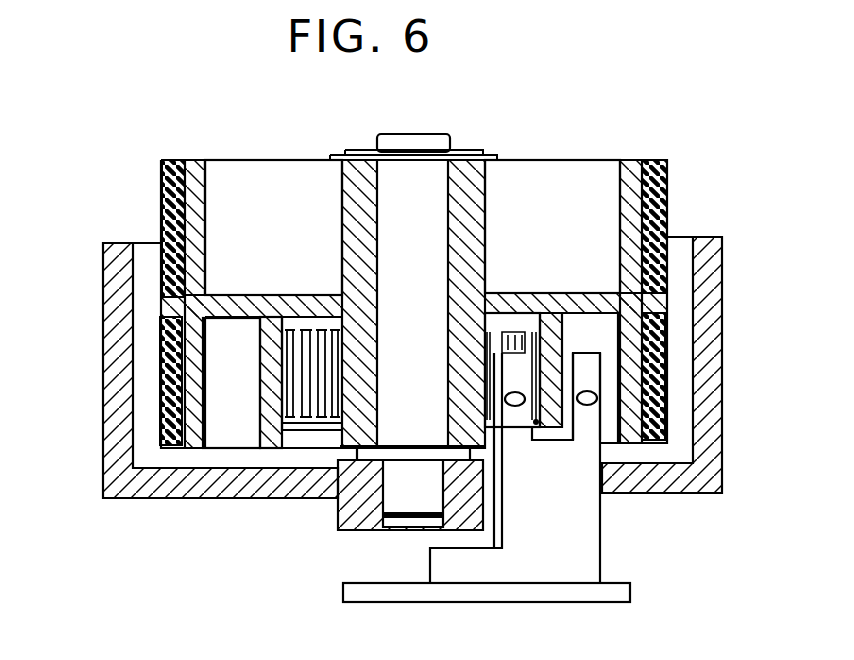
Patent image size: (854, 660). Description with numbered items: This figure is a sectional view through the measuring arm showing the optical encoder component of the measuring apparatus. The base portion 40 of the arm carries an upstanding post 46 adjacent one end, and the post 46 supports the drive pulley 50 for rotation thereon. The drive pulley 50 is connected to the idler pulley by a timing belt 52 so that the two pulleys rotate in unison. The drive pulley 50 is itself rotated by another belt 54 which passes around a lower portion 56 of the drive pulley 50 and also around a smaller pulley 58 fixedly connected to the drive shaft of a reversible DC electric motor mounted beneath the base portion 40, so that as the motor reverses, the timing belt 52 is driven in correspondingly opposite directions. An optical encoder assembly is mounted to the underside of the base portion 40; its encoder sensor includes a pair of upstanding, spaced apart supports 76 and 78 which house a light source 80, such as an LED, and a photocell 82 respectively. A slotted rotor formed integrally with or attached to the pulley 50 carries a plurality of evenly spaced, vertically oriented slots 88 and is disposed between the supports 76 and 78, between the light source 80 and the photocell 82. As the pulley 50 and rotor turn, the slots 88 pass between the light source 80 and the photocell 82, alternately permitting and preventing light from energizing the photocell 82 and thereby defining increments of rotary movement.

The base portion 40 is at (722, 330).
The post 46 is at (410, 140).
The drive pulley 50 is at (567, 185).
The timing belt 52 is at (162, 192).
The belt 54 is at (160, 393).
The lower portion 56 is at (203, 411).
The smaller pulley 58 is at (265, 432).
The support 76 is at (600, 362).
The support 78 is at (522, 322).
The light source 80 is at (597, 400).
The photocell 82 is at (515, 407).
The slots 88 is at (304, 330).